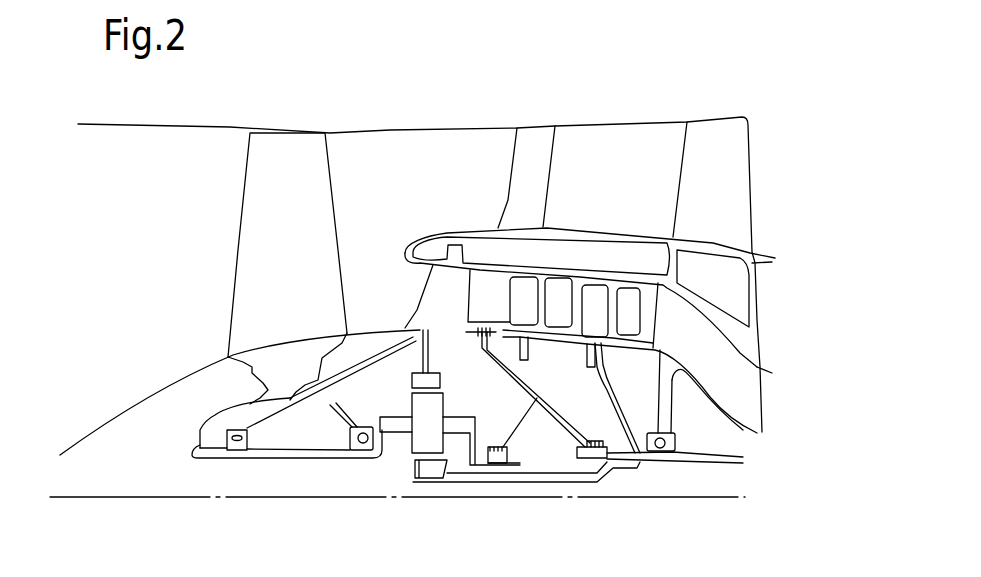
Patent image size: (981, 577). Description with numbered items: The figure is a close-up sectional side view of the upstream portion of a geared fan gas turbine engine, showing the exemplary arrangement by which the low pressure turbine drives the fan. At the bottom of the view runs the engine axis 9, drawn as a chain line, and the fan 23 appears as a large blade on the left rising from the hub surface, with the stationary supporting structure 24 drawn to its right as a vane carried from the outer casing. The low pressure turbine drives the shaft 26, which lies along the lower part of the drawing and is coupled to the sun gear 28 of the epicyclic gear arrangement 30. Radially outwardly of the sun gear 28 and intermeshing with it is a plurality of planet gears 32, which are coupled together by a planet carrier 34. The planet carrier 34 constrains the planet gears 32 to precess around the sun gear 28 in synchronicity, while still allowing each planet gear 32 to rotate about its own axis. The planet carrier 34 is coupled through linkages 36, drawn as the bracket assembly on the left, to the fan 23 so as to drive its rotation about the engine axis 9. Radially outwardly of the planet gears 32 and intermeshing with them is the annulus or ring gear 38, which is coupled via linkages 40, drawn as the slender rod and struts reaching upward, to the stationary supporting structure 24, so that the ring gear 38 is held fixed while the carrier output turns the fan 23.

The engine axis 9 is at (200, 499).
The fan 23 is at (260, 276).
The stationary supporting structure 24 is at (438, 293).
The shaft 26 is at (543, 482).
The sun gear 28 is at (423, 479).
The epicyclic gear arrangement 30 is at (382, 448).
The planet gears 32 is at (420, 442).
The planet carrier 34 is at (467, 443).
The linkages 36 is at (368, 463).
The ring gear 38 is at (412, 380).
The linkages 40 is at (432, 348).